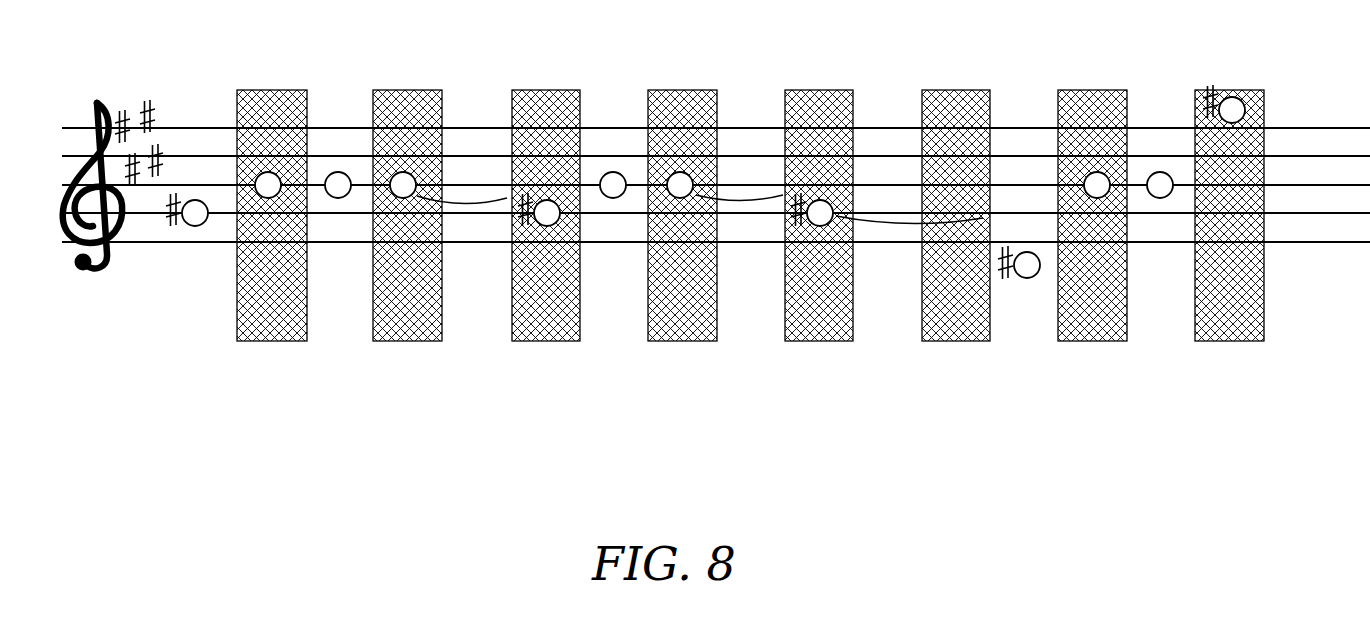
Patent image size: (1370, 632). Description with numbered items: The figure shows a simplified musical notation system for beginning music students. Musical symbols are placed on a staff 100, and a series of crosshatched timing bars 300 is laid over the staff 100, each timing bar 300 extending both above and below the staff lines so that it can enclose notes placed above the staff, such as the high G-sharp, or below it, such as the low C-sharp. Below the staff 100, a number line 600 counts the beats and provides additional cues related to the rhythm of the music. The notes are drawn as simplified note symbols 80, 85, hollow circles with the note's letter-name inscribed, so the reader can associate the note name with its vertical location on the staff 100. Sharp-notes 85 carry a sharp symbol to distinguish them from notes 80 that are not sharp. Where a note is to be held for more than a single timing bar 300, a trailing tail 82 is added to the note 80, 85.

The simplified note symbol 80 is at (275, 173).
The trailing tail 82 is at (737, 195).
The sharp-note 85 is at (544, 201).
The staff 100 is at (143, 247).
The timing bar 300 is at (537, 90).
The number line 600 is at (1253, 328).